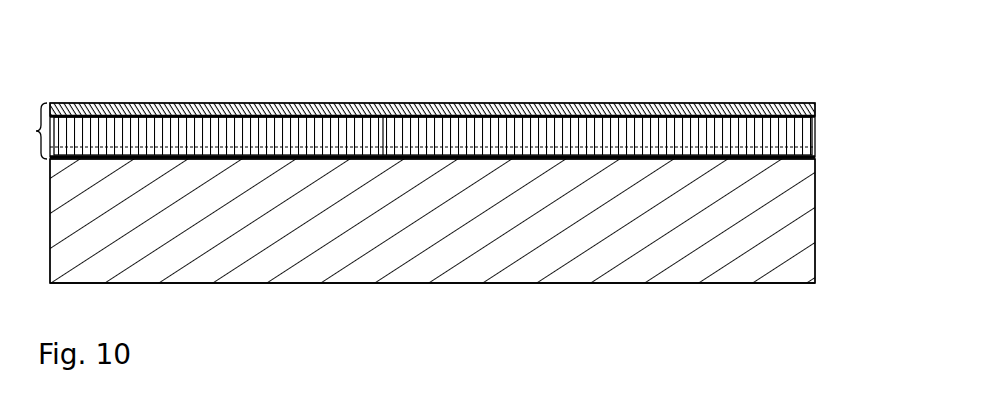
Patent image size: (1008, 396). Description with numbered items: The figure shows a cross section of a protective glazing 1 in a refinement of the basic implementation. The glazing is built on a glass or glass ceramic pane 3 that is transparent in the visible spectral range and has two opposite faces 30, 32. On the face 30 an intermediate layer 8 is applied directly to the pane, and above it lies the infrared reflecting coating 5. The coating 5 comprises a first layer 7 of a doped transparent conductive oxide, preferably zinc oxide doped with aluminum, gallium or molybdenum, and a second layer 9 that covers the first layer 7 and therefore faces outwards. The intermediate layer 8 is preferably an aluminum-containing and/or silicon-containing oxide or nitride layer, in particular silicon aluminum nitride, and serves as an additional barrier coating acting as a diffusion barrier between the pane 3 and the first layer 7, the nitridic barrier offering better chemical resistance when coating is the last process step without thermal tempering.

The protective glazing 1 is at (62, 47).
The glass or glass ceramic pane 3 is at (816, 217).
The infrared reflecting coating 5 is at (33, 131).
The first layer 7 is at (816, 141).
The intermediate layer 8 is at (816, 155).
The second layer 9 is at (816, 108).
The face 30 is at (402, 155).
The face 32 is at (345, 284).